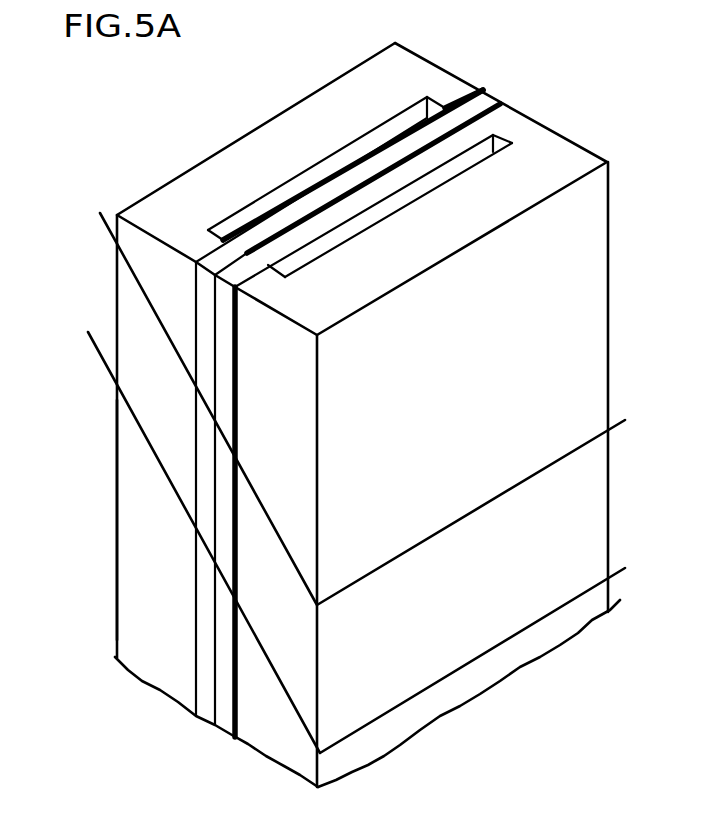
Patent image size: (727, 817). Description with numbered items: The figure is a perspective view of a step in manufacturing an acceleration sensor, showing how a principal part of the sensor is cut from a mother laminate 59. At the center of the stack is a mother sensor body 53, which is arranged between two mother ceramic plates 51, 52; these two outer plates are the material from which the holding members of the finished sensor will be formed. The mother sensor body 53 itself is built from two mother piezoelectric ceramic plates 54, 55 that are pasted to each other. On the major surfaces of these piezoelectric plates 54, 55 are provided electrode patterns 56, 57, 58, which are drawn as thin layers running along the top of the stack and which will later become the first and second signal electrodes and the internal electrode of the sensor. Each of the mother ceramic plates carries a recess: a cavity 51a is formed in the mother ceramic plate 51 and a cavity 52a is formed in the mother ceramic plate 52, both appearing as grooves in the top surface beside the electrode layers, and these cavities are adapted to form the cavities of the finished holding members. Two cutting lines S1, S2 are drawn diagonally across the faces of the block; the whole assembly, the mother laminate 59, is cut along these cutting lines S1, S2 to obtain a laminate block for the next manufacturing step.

The mother ceramic plate 51 is at (149, 198).
The cavity 51a is at (233, 221).
The mother ceramic plate 52 is at (577, 142).
The cavity 52a is at (440, 182).
The mother sensor body 53 is at (490, 93).
The mother piezoelectric ceramic plate 54 is at (330, 215).
The mother piezoelectric ceramic plate 55 is at (297, 215).
The electrode pattern 56 is at (472, 160).
The electrode pattern 57 is at (350, 160).
The electrode pattern 58 is at (413, 147).
The mother laminate 59 is at (117, 523).
The cutting line S1 is at (100, 222).
The cutting line S2 is at (100, 352).